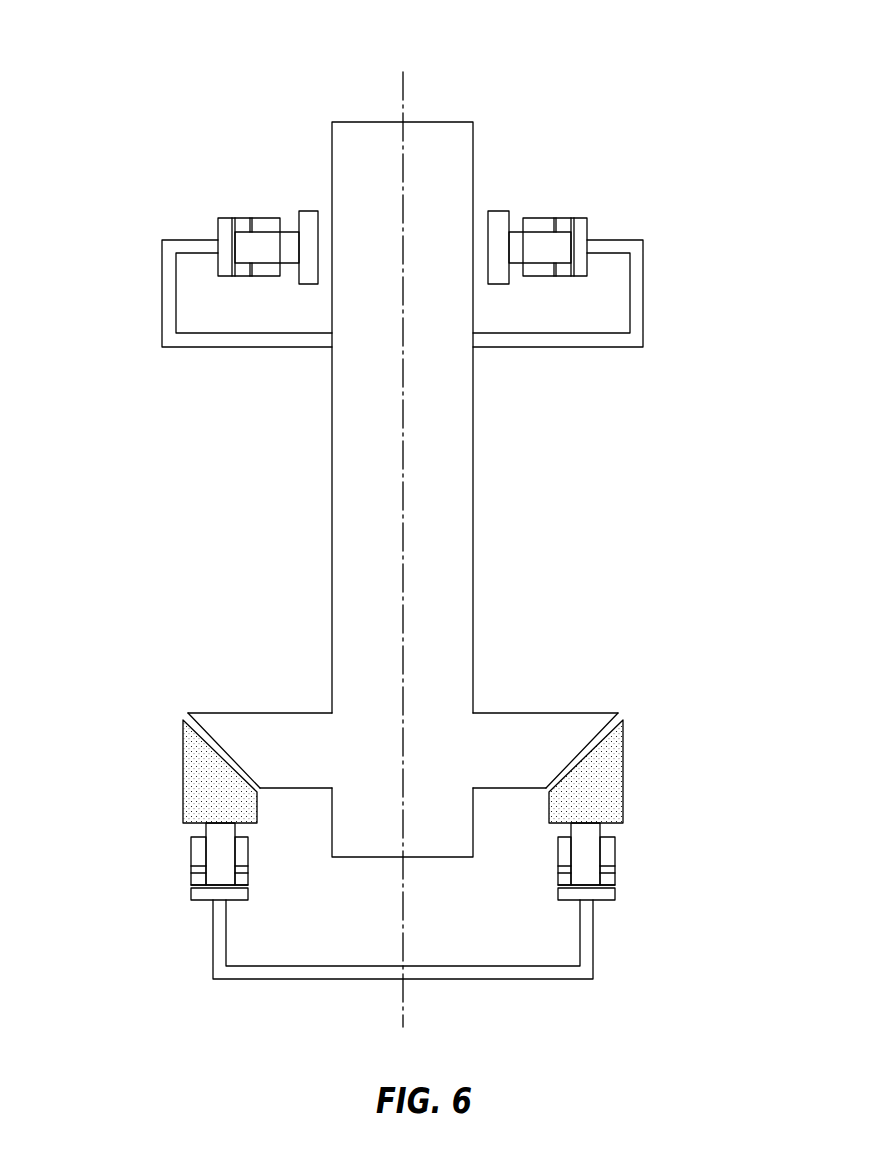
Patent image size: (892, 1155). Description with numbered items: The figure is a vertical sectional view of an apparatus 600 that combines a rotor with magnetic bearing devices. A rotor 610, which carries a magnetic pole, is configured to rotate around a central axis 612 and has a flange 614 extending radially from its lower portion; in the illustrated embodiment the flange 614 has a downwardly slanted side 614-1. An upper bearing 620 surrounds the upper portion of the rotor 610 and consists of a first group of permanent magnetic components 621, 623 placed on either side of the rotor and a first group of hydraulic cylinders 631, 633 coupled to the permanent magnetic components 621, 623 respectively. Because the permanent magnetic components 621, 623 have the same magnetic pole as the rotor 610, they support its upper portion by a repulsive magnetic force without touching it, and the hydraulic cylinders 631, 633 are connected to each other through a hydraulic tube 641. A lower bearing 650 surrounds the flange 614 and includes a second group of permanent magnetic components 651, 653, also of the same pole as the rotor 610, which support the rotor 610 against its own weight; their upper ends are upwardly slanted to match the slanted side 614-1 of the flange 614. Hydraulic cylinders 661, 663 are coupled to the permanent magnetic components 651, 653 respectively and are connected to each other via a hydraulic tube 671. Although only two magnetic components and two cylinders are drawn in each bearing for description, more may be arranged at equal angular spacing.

The apparatus 600 is at (54, 117).
The rotor 610 is at (447, 121).
The axis 612 is at (400, 98).
The flange 614 is at (517, 733).
The downwardly slanted side 614-1 is at (583, 740).
The upper bearing 620 is at (737, 230).
The permanent magnetic component 621 is at (503, 210).
The permanent magnetic component 623 is at (300, 210).
The hydraulic cylinder 631 is at (580, 218).
The hydraulic cylinder 633 is at (222, 218).
The hydraulic tube 641 is at (643, 320).
The lower bearing 650 is at (737, 762).
The permanent magnetic component 651 is at (613, 780).
The permanent magnetic component 653 is at (190, 783).
The hydraulic cylinder 661 is at (615, 890).
The hydraulic cylinder 663 is at (192, 893).
The hydraulic tube 671 is at (563, 979).